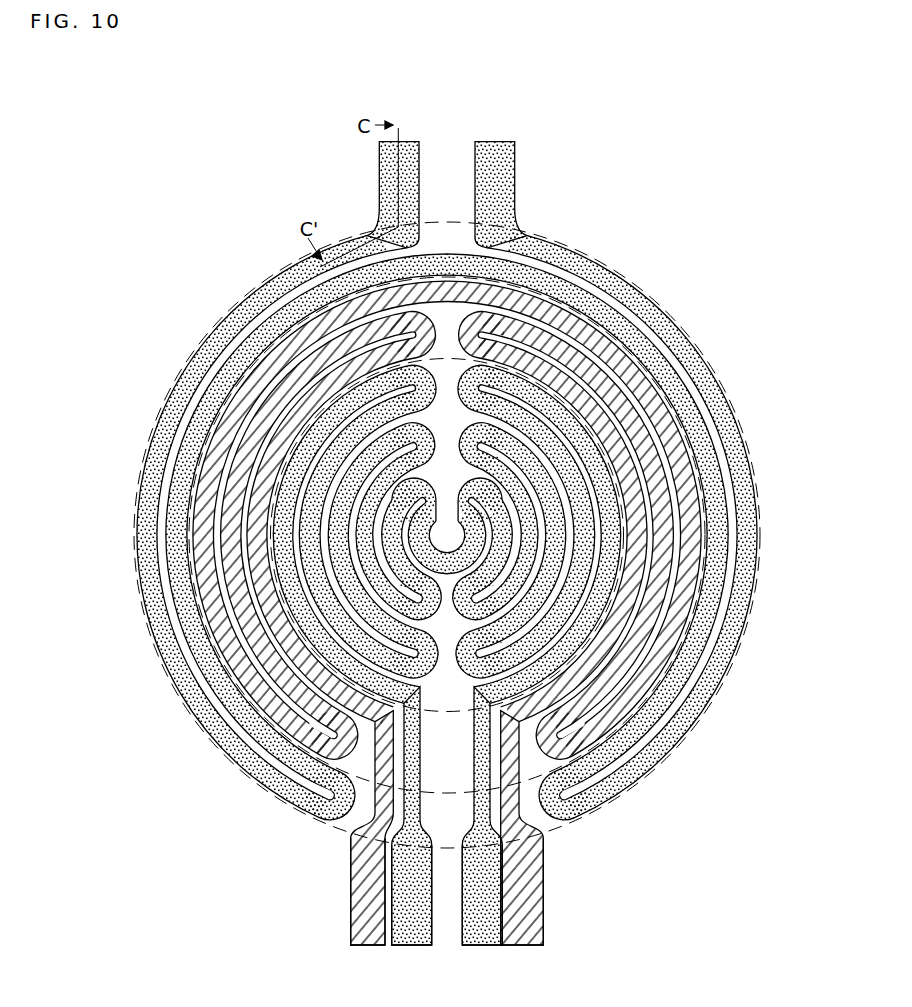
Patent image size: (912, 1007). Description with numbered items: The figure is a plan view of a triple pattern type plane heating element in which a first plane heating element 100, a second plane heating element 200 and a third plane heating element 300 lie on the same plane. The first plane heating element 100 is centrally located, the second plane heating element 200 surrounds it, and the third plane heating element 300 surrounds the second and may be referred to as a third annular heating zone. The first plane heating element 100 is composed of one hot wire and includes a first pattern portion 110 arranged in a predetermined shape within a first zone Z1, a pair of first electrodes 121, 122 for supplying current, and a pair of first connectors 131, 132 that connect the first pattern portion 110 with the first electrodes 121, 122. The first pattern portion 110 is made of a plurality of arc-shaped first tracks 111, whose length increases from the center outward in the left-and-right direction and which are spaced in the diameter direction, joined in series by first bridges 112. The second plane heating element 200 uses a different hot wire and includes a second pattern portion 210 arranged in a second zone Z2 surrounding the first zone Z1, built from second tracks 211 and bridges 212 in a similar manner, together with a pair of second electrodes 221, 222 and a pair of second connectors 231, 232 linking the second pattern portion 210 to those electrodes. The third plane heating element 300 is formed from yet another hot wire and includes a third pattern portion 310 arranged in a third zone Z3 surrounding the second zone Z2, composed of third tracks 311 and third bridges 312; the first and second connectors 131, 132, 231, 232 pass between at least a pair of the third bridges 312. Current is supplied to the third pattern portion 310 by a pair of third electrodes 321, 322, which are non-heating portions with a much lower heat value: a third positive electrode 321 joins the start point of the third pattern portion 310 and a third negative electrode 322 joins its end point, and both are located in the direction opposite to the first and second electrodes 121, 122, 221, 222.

The first plane heating element 100 is at (402, 520).
The first pattern portion 110 is at (241, 536).
The first tracks 111 is at (350, 410).
The first bridges 112 is at (395, 352).
The first electrode 121 is at (411, 942).
The first electrode 122 is at (487, 942).
The first connector 131 is at (392, 840).
The first connector 132 is at (502, 840).
The second plane heating element 200 is at (459, 522).
The second pattern portion 210 is at (416, 522).
The second tracks 211 is at (380, 284).
The bridges 212 is at (398, 309).
The second electrode 221 is at (367, 942).
The second electrode 222 is at (526, 942).
The second connector 231 is at (376, 806).
The second connector 232 is at (520, 806).
The third plane heating element 300 is at (431, 451).
The third pattern portion 310 is at (256, 528).
The third tracks 311 is at (247, 773).
The third bridges 312 is at (300, 812).
The third positive electrode 321 is at (410, 142).
The third negative electrode 322 is at (496, 142).
The first zone Z1 is at (640, 385).
The second zone Z2 is at (697, 461).
The third zone Z3 is at (607, 268).